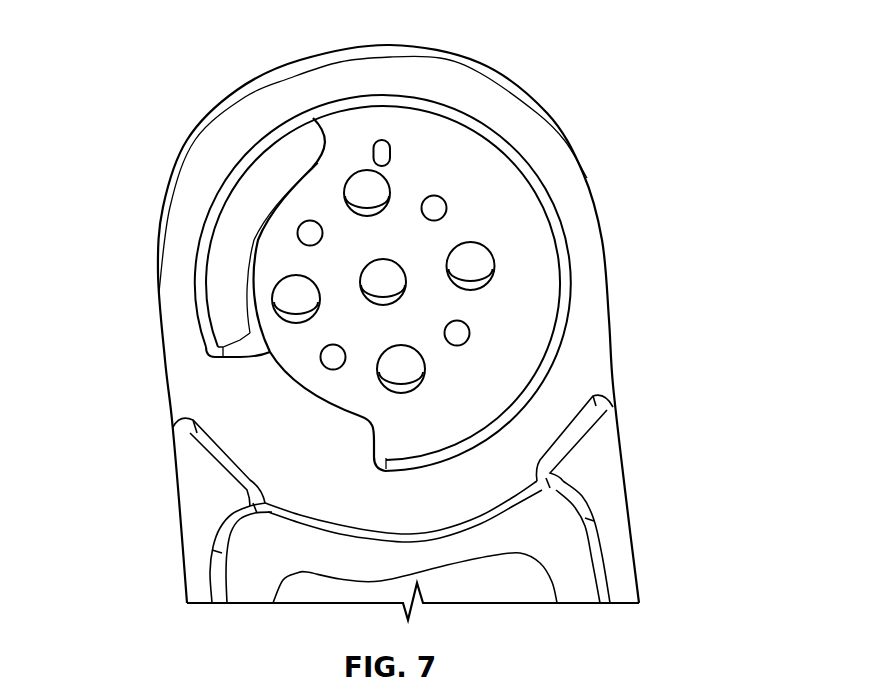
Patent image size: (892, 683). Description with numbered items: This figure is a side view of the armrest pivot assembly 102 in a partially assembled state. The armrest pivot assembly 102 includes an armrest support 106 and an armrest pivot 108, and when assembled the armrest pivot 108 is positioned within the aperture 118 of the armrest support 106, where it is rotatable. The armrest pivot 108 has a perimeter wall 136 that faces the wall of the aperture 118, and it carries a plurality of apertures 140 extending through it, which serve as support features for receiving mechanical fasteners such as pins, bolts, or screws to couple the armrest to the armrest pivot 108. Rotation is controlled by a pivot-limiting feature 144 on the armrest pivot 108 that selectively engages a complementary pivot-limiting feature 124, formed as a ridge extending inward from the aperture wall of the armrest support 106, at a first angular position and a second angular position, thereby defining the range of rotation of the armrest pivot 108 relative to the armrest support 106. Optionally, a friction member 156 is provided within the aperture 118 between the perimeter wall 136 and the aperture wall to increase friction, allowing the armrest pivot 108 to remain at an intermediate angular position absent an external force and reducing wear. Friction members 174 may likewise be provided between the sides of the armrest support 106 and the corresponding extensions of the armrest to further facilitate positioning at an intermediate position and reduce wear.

The armrest pivot assembly 102 is at (110, 118).
The armrest support 106 is at (606, 462).
The armrest pivot 108 is at (424, 205).
The aperture 118 is at (234, 205).
The pivot-limiting feature 124 is at (263, 363).
The perimeter wall 136 is at (580, 252).
The apertures 140 is at (367, 195).
The pivot-limiting feature 144 is at (257, 257).
The friction member 156 is at (580, 230).
The friction members 174 is at (220, 250).